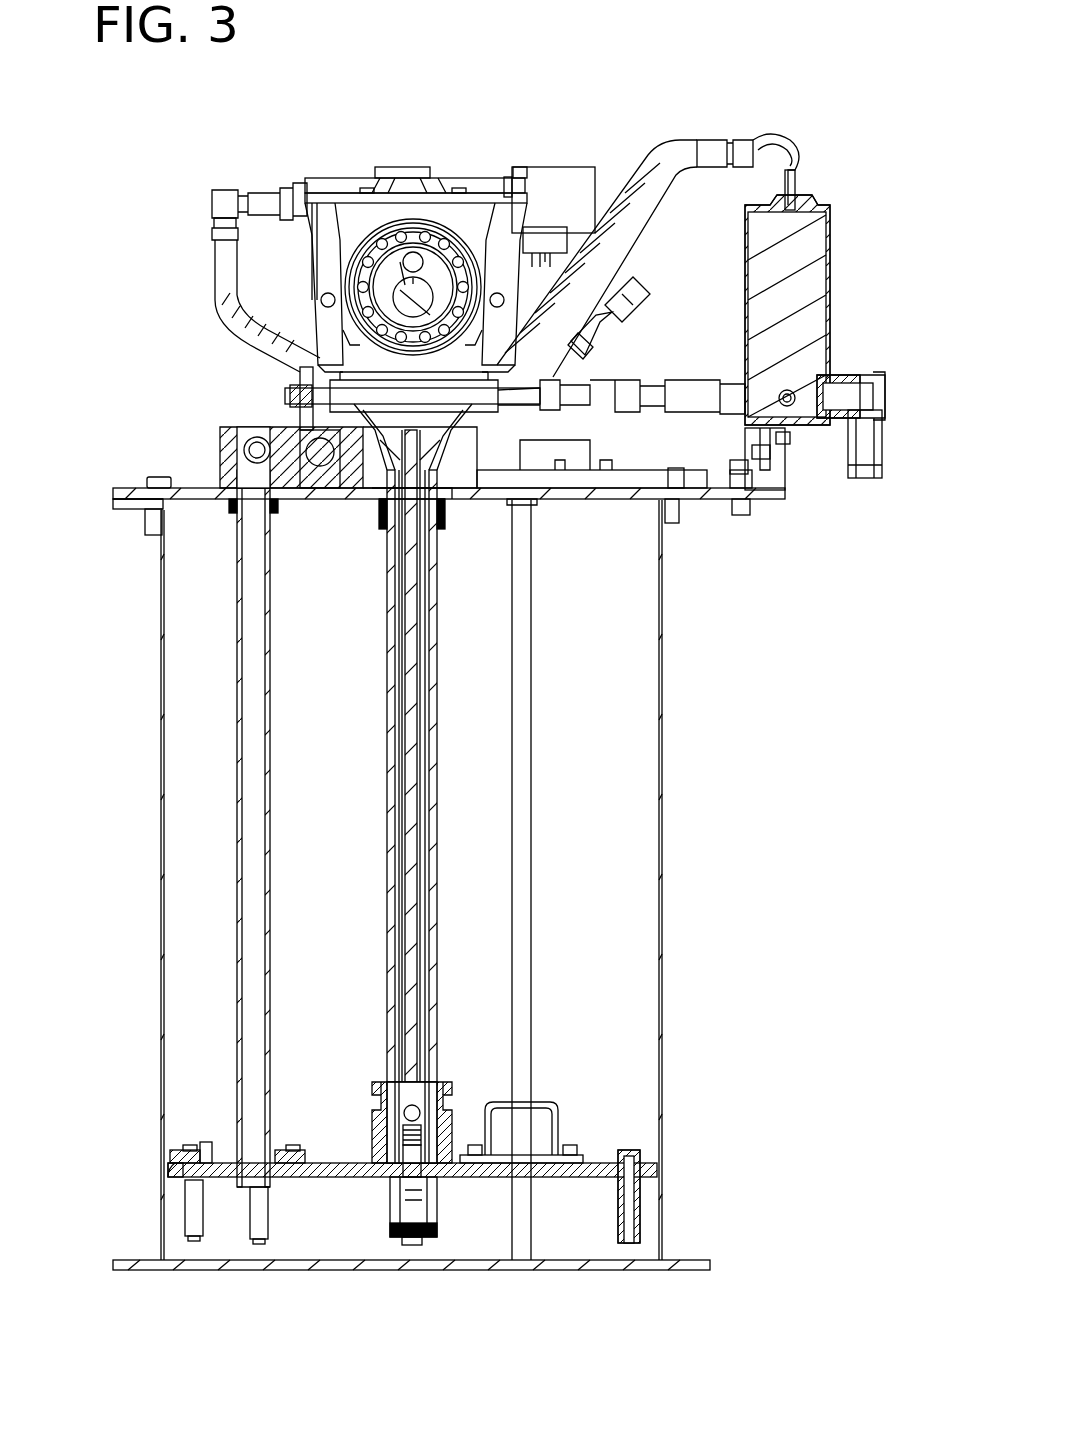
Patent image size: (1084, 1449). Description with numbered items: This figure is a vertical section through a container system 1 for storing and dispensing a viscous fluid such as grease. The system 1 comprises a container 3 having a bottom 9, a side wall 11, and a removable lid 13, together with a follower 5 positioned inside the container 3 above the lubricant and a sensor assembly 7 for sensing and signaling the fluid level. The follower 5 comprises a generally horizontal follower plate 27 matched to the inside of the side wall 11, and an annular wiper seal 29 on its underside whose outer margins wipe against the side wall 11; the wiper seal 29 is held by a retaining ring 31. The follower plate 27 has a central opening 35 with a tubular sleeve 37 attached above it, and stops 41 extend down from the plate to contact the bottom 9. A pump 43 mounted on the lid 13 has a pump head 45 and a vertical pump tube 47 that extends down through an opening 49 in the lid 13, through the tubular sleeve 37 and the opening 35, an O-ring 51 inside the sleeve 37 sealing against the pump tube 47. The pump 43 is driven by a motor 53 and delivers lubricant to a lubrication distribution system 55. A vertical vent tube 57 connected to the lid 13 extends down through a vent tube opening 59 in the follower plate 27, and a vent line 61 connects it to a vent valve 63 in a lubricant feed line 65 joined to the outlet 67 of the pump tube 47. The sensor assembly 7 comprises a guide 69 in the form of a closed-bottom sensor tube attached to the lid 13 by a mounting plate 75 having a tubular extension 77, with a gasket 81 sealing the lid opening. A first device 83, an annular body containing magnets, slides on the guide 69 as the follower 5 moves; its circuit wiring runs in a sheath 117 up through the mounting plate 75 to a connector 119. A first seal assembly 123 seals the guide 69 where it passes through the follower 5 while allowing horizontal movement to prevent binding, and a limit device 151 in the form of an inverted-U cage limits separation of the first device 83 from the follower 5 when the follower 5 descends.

The container system 1 is at (155, 188).
The container 3 is at (195, 697).
The follower 5 is at (312, 1152).
The sensor assembly 7 is at (568, 1093).
The bottom 9 is at (645, 1260).
The side wall 11 is at (161, 833).
The lid 13 is at (128, 488).
The follower plate 27 is at (370, 1163).
The wiper seal 29 is at (650, 1170).
The retaining ring 31 is at (343, 1178).
The central opening 35 is at (447, 1188).
The tubular sleeve 37 is at (542, 1095).
The stops 41 is at (260, 1243).
The pump 43 is at (417, 158).
The pump head 45 is at (235, 268).
The pump tube 47 is at (440, 683).
The opening 49 is at (455, 516).
The O-ring 51 is at (443, 1085).
The motor 53 is at (365, 238).
The lubrication distribution system 55 is at (843, 172).
The vent tube 57 is at (237, 630).
The vent tube opening 59 is at (280, 1187).
The vent line 61 is at (650, 153).
The vent valve 63 is at (832, 272).
The lubricant feed line 65 is at (890, 383).
The outlet 67 is at (862, 480).
The guide 69 is at (532, 727).
The mounting plate 75 is at (540, 490).
The tubular extension 77 is at (537, 502).
The gasket 81 is at (610, 487).
The first device 83 is at (542, 1135).
The sheath 117 is at (584, 350).
The connector 119 is at (624, 288).
The first seal assembly 123 is at (590, 1153).
The limit device 151 is at (549, 1090).